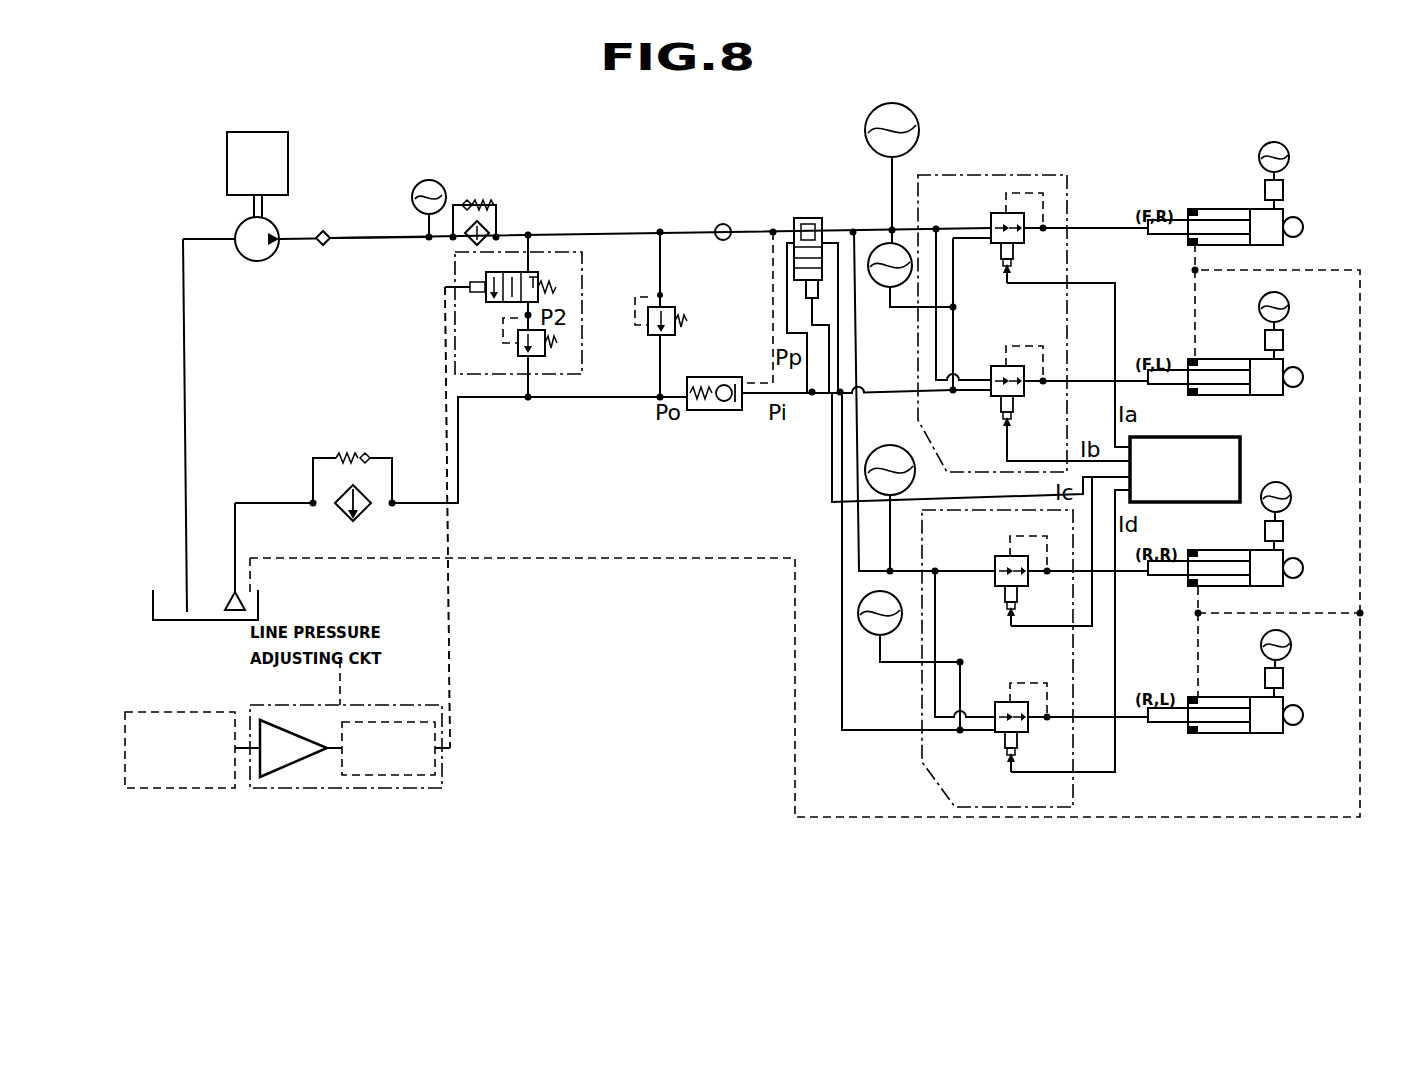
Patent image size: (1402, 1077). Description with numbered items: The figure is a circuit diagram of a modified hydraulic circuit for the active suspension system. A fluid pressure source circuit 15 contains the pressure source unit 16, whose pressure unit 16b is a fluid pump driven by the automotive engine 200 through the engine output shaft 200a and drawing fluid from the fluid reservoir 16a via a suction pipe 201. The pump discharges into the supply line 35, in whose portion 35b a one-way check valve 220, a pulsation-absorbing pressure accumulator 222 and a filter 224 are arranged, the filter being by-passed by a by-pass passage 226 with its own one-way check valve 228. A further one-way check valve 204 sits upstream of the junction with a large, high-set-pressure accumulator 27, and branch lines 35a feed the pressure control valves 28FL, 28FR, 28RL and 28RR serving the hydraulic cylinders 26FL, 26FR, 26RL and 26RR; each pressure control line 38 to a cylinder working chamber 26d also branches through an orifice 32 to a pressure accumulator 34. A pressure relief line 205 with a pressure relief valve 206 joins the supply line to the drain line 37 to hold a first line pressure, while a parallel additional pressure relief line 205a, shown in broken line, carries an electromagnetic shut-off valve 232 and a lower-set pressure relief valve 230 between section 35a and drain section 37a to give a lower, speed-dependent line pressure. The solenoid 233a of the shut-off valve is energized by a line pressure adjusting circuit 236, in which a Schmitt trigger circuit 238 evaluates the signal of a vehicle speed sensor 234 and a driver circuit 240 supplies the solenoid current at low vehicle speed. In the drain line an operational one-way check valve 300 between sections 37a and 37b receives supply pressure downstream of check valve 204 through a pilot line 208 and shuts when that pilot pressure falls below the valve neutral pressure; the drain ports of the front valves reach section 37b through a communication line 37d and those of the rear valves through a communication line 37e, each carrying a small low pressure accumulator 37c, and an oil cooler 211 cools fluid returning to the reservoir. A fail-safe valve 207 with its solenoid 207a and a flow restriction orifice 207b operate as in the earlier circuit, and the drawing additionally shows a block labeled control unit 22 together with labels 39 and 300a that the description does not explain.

The automotive engine 200 is at (262, 132).
The engine output shaft 200a is at (254, 208).
The pressure source unit 16 is at (307, 170).
The pressure unit 16b is at (265, 259).
The fluid reservoir 16a is at (258, 603).
The one-way check valve 220 is at (326, 232).
The supply line 35 is at (383, 242).
The pressure accumulator 222 is at (428, 180).
The one-way check valve 228 is at (482, 203).
The by-pass passage 226 is at (498, 213).
The filter 224 is at (466, 240).
The portion of the supply line 35b is at (540, 275).
The electromagnetic shut-off valve 232 is at (552, 274).
The electromagnetic solenoid 233a is at (470, 290).
The pressure relief valve 230 is at (548, 342).
The additional pressure relief line 205a is at (530, 372).
The section of the drain line 37a is at (532, 380).
The suction pipe 201 is at (188, 400).
The oil cooler 211 is at (347, 515).
The fluid pressure source circuit 15 is at (492, 505).
The pressure relief valve 206 is at (664, 306).
The return line 39 is at (692, 312).
The one-way check valve 204 is at (722, 223).
The pressure relief line 205 is at (661, 372).
The operational one-way check valve 300 is at (738, 380).
The pilot line 208 is at (772, 298).
The fail-safe valve 207 is at (806, 217).
The solenoid 207a is at (793, 262).
The flow restriction orifice 207b is at (800, 406).
The pilot port 300a is at (815, 264).
The section of the drain line 37b is at (839, 390).
The drain line 37 is at (821, 405).
The high pressure accumulator 27 is at (920, 124).
The branch lines 35a is at (966, 226).
The low pressure accumulator 37c is at (914, 238).
The communication line 37d is at (954, 292).
The communication line 37e is at (946, 590).
The pressure control valve 28FR is at (1026, 240).
The pressure control valve 28FL is at (991, 393).
The pressure control valve 28RR is at (996, 590).
The pressure control valve 28RL is at (993, 738).
The pressure control line 38 is at (1102, 226).
The control unit 22 is at (1243, 452).
The hydraulic cylinder 26FR is at (1280, 246).
The hydraulic cylinder 26FL is at (1278, 396).
The hydraulic cylinder 26RR is at (1275, 587).
The hydraulic cylinder 26RL is at (1275, 734).
The working chamber 26d is at (1286, 218).
The orifice 32 is at (1285, 188).
The pressure accumulator 34 is at (1286, 150).
The vehicle speed sensor 234 is at (180, 711).
The line pressure adjusting circuit 236 is at (350, 790).
The Schmitt trigger circuit 238 is at (287, 777).
The driver circuit 240 is at (402, 789).